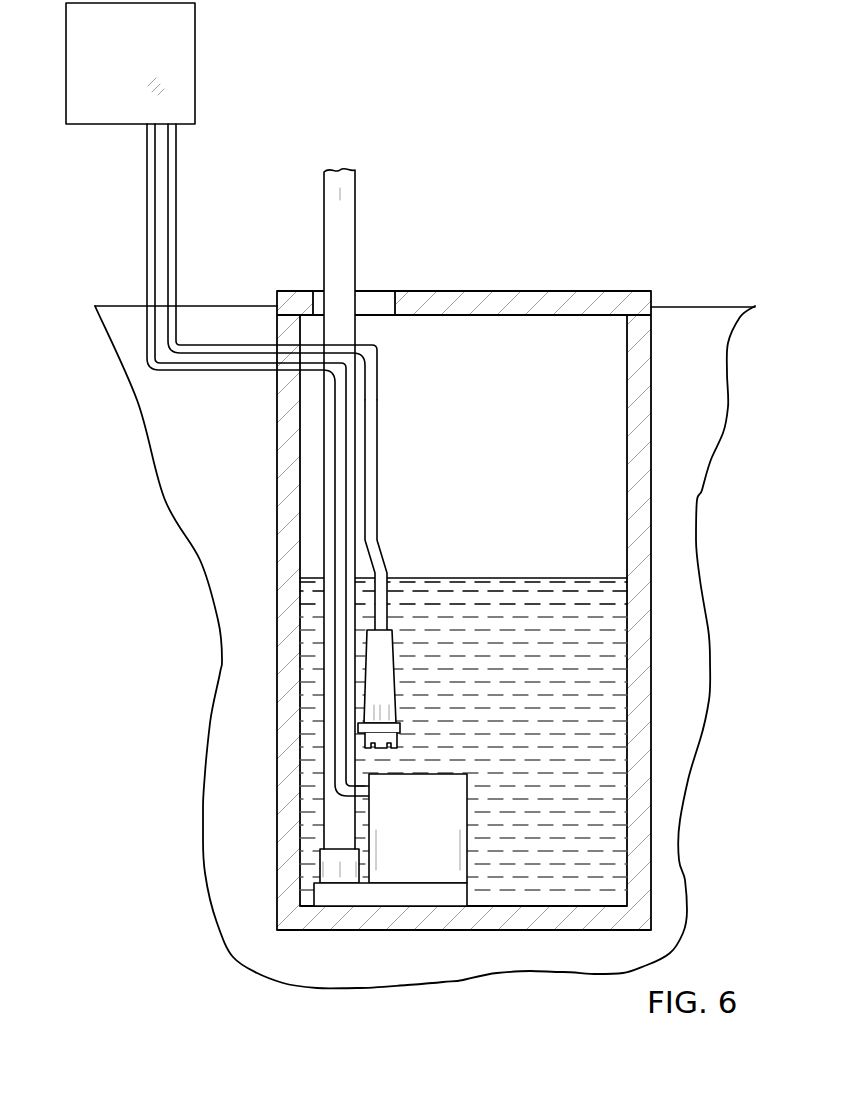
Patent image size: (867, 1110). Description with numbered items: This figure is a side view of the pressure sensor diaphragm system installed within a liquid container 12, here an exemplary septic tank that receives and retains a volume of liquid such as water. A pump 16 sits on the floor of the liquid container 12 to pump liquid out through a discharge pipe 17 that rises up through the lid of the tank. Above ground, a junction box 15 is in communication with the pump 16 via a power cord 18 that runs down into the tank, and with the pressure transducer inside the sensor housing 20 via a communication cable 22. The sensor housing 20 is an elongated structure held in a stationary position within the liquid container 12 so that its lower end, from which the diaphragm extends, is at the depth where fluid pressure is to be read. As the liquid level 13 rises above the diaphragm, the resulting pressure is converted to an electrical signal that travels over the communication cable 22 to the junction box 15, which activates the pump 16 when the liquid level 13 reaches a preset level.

The liquid container 12 is at (635, 365).
The liquid level 13 is at (532, 577).
The junction box 15 is at (195, 49).
The pump 16 is at (433, 858).
The discharge pipe 17 is at (337, 823).
The power cord 18 is at (147, 223).
The sensor housing 20 is at (367, 678).
The communication cable 22 is at (383, 560).